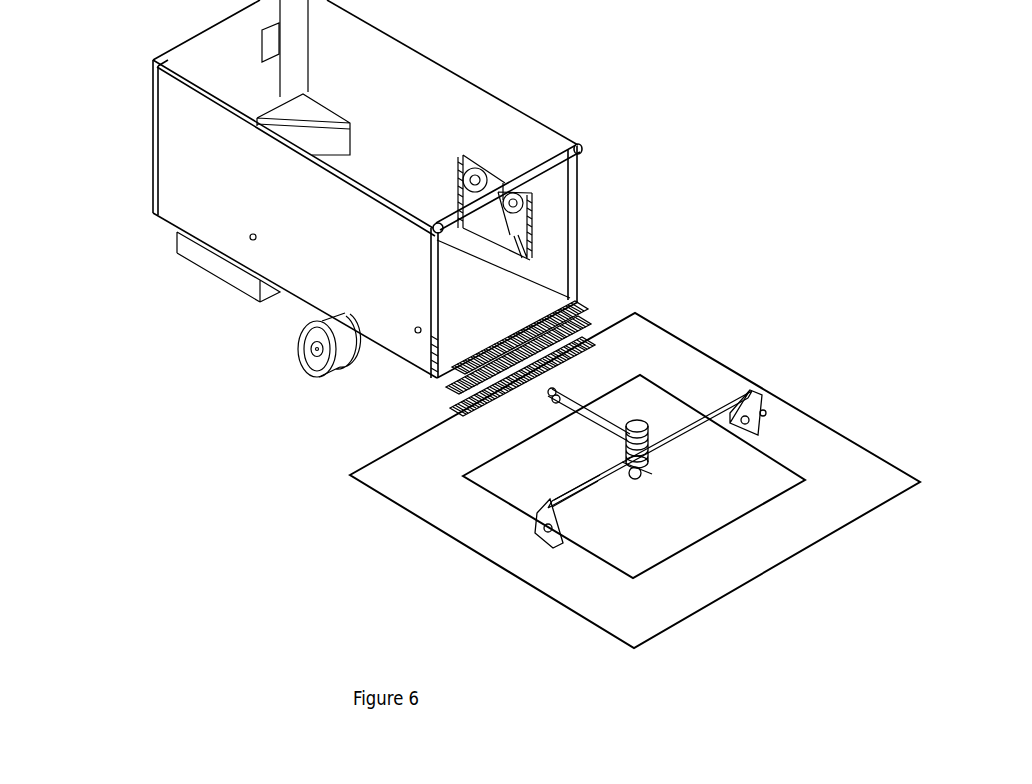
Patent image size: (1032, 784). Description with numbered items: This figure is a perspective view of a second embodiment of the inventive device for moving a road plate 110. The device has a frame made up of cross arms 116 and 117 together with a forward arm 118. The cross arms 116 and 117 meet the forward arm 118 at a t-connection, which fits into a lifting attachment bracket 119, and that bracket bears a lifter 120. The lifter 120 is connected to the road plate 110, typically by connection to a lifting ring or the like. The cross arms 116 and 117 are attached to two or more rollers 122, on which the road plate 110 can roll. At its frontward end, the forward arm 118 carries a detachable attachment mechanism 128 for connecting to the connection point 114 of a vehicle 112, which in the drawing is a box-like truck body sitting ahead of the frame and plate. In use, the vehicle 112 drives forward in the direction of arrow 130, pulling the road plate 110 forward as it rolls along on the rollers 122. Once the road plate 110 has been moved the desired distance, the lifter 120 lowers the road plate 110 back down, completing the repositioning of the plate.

The arrow 130 is at (18, 103).
The vehicle 112 is at (467, 73).
The connection point 114 is at (580, 308).
The detachable attachment mechanism 128 is at (588, 327).
The road plate 110 is at (641, 377).
The forward arm 118 is at (575, 410).
The lifter 120 is at (653, 423).
The lifting attachment bracket 119 is at (652, 464).
The cross arm 116 is at (738, 420).
The cross arm 117 is at (587, 488).
The rollers 122 is at (762, 411).